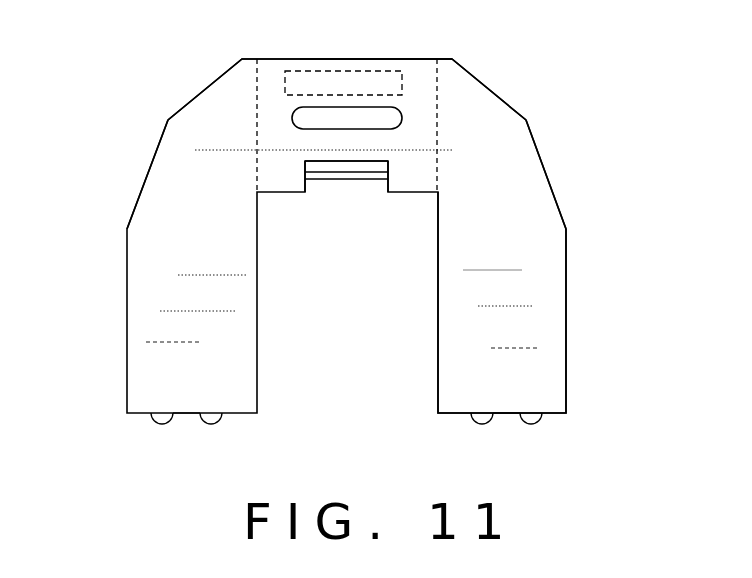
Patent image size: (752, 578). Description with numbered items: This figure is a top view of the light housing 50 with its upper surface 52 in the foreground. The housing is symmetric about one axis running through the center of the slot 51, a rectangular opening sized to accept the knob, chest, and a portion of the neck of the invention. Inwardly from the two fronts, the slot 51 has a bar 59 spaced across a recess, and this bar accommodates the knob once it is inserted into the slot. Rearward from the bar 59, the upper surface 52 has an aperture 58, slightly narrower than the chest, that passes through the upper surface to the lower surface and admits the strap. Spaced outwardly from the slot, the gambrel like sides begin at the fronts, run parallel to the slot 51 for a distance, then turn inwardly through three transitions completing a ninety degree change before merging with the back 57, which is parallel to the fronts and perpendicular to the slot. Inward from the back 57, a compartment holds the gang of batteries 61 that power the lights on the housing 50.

The light housing 50 is at (151, 78).
The slot 51 is at (438, 362).
The upper surface 52 is at (489, 108).
The back 57 is at (382, 50).
The aperture 58 is at (382, 117).
The bar 59 is at (372, 180).
The batteries 61 is at (308, 72).